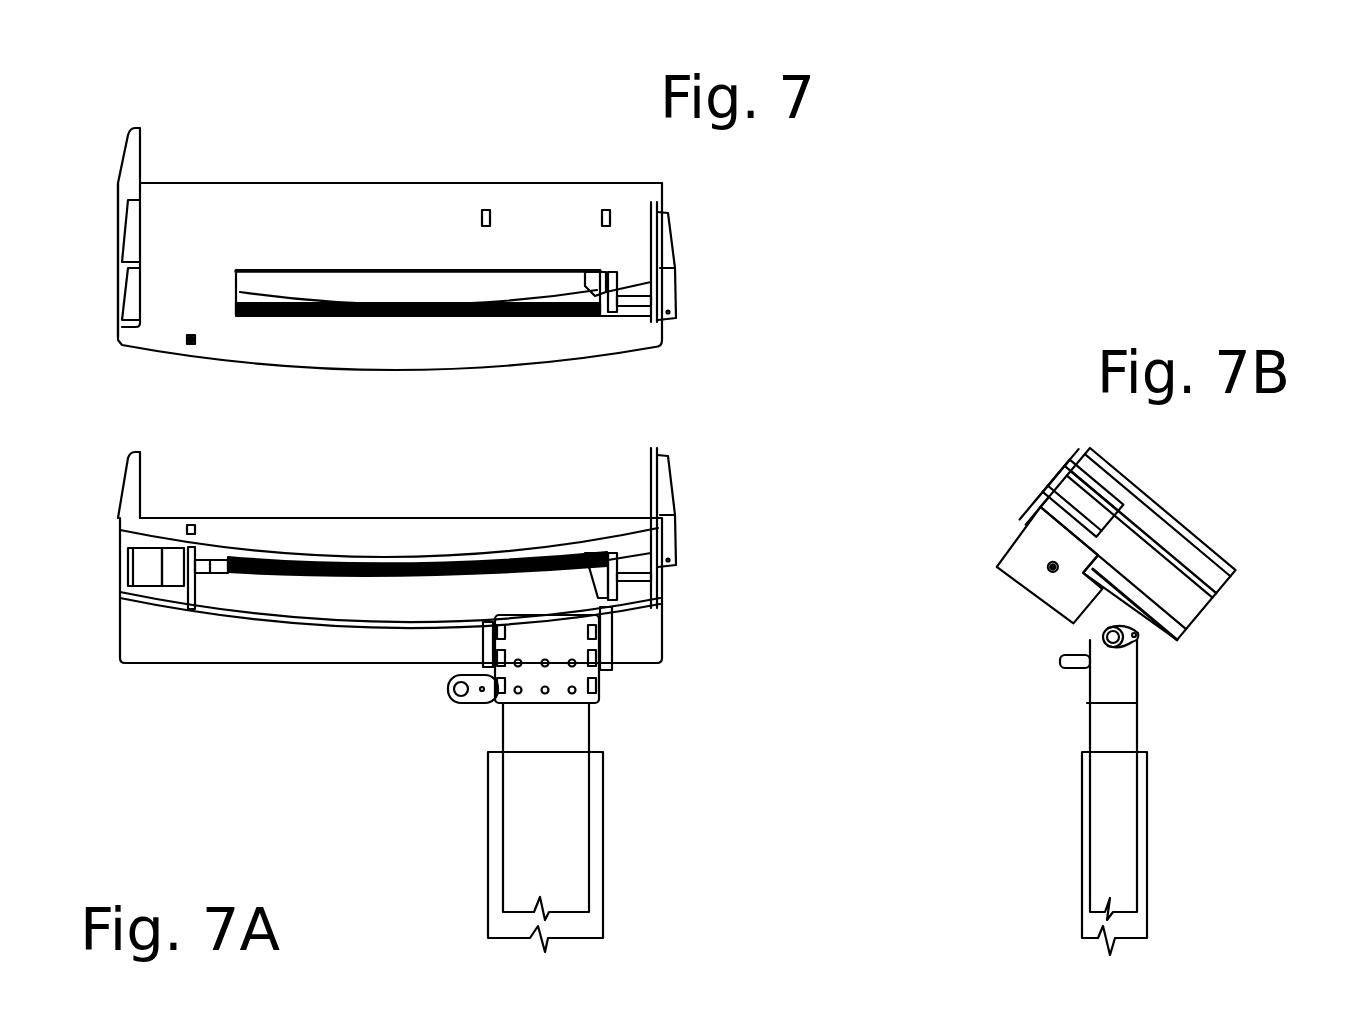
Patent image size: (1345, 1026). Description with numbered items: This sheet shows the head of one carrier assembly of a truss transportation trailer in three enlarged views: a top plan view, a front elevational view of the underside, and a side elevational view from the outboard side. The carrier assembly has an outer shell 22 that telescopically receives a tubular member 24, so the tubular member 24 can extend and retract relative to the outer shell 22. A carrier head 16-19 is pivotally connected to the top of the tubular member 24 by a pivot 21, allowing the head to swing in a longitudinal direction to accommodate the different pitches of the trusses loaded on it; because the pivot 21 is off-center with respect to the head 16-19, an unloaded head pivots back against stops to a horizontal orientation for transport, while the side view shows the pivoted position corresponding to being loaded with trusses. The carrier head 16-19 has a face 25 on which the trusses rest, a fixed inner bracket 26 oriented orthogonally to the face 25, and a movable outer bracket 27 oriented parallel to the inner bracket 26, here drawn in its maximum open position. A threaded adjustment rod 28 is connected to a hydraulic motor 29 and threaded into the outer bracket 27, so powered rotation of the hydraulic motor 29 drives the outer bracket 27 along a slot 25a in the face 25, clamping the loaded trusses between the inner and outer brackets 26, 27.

In FIG. 7, the carrier head 16-19 is at (285, 121).
In FIG. 7A, the carrier head 16-19 is at (702, 630).
In FIG. 7B, the carrier head 16-19 is at (1045, 470).
In FIG. 7A, the pivot 21 is at (614, 638).
In FIG. 7B, the pivot 21 is at (1112, 650).
In FIG. 7A, the outer shell 22 is at (488, 882).
In FIG. 7B, the outer shell 22 is at (1143, 880).
In FIG. 7A, the tubular member 24 is at (571, 724).
In FIG. 7B, the tubular member 24 is at (1114, 730).
In FIG. 7, the face 25 is at (393, 232).
In FIG. 7, the slot 25a is at (282, 268).
In FIG. 7, the fixed inner bracket 26 is at (138, 283).
In FIG. 7A, the fixed inner bracket 26 is at (138, 487).
In FIG. 7B, the fixed inner bracket 26 is at (1178, 572).
In FIG. 7, the movable outer bracket 27 is at (672, 236).
In FIG. 7A, the movable outer bracket 27 is at (668, 498).
In FIG. 7B, the movable outer bracket 27 is at (1062, 494).
In FIG. 7, the threaded adjustment rod 28 is at (478, 310).
In FIG. 7A, the threaded adjustment rod 28 is at (248, 570).
In FIG. 7A, the hydraulic motor 29 is at (147, 580).